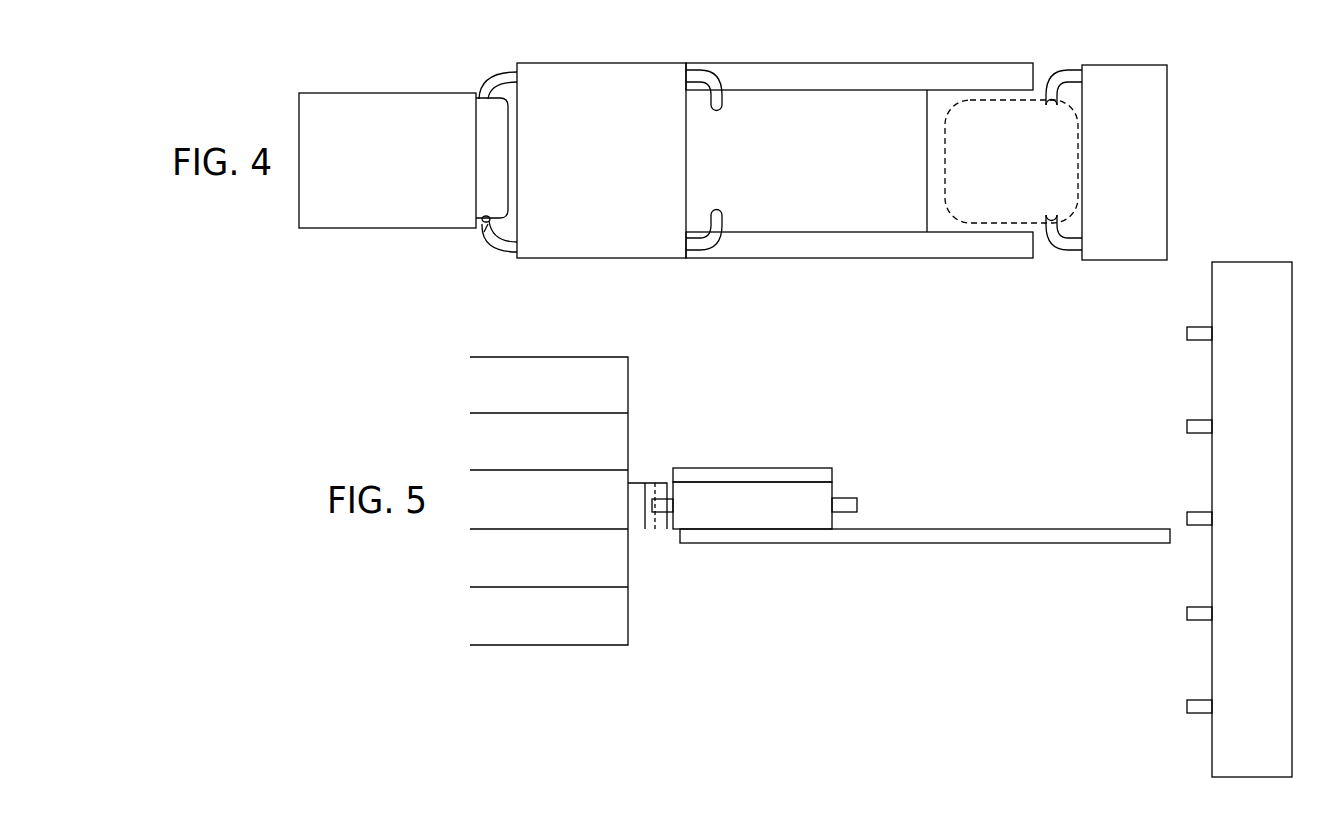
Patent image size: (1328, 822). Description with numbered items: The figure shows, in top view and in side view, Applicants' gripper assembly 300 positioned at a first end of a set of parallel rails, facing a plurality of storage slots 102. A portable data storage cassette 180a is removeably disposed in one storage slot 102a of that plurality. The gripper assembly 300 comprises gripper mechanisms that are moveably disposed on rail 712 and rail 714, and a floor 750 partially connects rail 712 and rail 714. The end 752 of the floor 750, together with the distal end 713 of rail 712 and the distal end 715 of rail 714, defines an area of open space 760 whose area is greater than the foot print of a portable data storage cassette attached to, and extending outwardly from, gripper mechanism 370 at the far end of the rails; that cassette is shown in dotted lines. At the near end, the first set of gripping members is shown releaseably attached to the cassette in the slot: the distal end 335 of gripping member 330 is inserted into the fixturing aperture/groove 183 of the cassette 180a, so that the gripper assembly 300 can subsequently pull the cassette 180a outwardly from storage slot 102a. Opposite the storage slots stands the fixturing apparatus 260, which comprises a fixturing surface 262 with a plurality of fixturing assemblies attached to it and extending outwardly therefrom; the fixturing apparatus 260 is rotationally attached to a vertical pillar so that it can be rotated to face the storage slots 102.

In FIG. 5, the plurality of storage slots 102 is at (571, 650).
In FIG. 4, the storage slot 102a is at (406, 161).
In FIG. 5, the storage slot 102a is at (569, 515).
In FIG. 4, the portable data storage cassette 180a is at (485, 117).
In FIG. 4, the fixturing aperture/groove 183 is at (488, 214).
In FIG. 5, the fixturing aperture/groove 183 is at (651, 488).
In FIG. 4, the gripper assembly 300 is at (614, 161).
In FIG. 5, the gripper assembly 300 is at (771, 460).
In FIG. 5, the gripper member 330 is at (665, 512).
In FIG. 4, the distal end 335 is at (488, 236).
In FIG. 4, the gripper mechanism 370 is at (1139, 161).
In FIG. 4, the rail 712 is at (798, 82).
In FIG. 4, the distal end of rail 713 is at (1035, 77).
In FIG. 4, the rail 714 is at (798, 245).
In FIG. 5, the rail 714 is at (921, 542).
In FIG. 4, the distal end of rail 715 is at (1035, 245).
In FIG. 4, the floor 750 is at (816, 161).
In FIG. 4, the end of floor 752 is at (925, 190).
In FIG. 4, the open space 760 is at (937, 99).
In FIG. 5, the fixturing apparatus 260 is at (1240, 258).
In FIG. 5, the fixturing surface 262 is at (1212, 388).